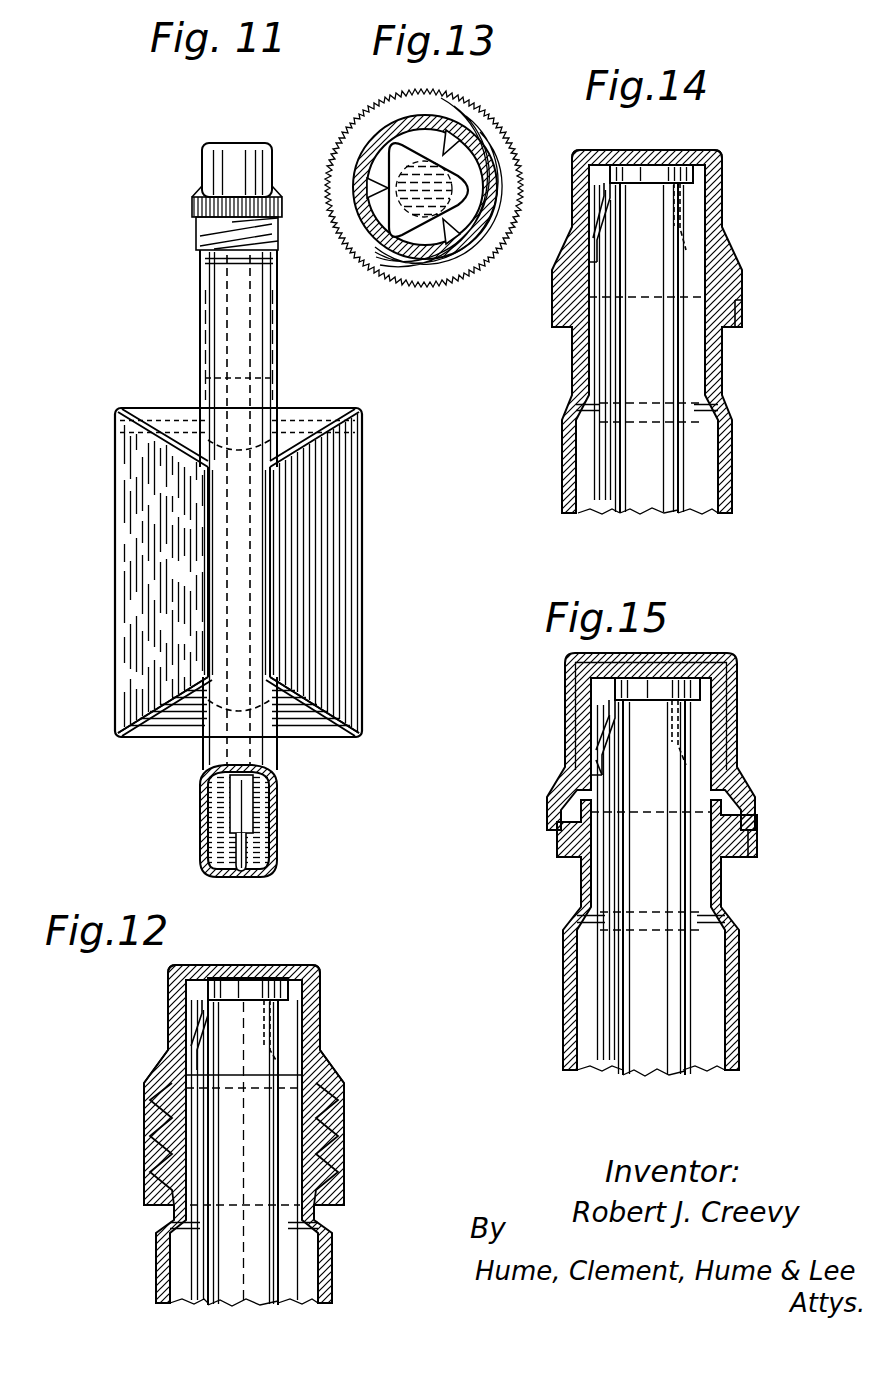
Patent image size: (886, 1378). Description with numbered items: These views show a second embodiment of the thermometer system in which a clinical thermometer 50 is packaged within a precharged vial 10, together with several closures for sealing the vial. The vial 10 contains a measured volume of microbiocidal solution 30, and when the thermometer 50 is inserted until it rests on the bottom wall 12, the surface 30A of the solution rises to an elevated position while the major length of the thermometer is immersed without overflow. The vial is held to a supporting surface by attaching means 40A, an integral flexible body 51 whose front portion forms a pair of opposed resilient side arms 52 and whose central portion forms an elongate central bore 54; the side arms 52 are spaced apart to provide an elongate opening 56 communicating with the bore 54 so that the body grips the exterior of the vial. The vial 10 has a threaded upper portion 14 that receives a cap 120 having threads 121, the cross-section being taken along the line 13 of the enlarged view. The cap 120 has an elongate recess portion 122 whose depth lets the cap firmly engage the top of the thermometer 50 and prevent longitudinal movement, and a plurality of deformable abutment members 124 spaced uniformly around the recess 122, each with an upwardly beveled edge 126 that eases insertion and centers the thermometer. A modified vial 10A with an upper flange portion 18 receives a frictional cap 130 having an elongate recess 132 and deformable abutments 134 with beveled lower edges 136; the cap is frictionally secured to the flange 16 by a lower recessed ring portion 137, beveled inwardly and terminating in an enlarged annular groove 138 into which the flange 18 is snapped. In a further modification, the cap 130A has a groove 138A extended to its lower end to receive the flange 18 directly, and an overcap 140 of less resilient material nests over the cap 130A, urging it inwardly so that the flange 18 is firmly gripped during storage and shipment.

In FIG. 11, the vial 10 is at (284, 346).
In FIG. 14, the vial 10A is at (744, 473).
In FIG. 15, the vial 10A is at (744, 1015).
In FIG. 11, the bottom wall 12 is at (233, 160).
In FIG. 12, the section line 13 is at (143, 1006).
In FIG. 11, the threaded upper portion 14 is at (196, 233).
In FIG. 12, the threaded upper portion 14 is at (341, 1100).
In FIG. 14, the flange 16 is at (720, 376).
In FIG. 15, the flange 16 is at (722, 892).
In FIG. 14, the upper flange portion 18 is at (724, 292).
In FIG. 15, the upper flange portion 18 is at (754, 815).
In FIG. 11, the microbiocidal solution 30 is at (252, 800).
In FIG. 11, the surface of the solution 30A is at (272, 364).
In FIG. 11, the attaching means 40A is at (370, 540).
In FIG. 11, the clinical thermometer 50 is at (241, 823).
In FIG. 14, the clinical thermometer 50 is at (666, 445).
In FIG. 15, the clinical thermometer 50 is at (676, 966).
In FIG. 12, the clinical thermometer 50 is at (226, 1255).
In FIG. 11, the body 51 is at (352, 440).
In FIG. 11, the side arms 52 is at (274, 681).
In FIG. 11, the central bore 54 is at (220, 428).
In FIG. 11, the opening 56 is at (277, 495).
In FIG. 11, the cap 120 is at (202, 157).
In FIG. 13, the cap 120 is at (448, 262).
In FIG. 12, the cap 120 is at (345, 1172).
In FIG. 12, the threads 121 is at (341, 1130).
In FIG. 13, the recess portion 122 is at (374, 214).
In FIG. 12, the recess portion 122 is at (302, 1046).
In FIG. 13, the deformable abutment members 124 is at (372, 175).
In FIG. 12, the deformable abutment members 124 is at (243, 960).
In FIG. 12, the beveled edge 126 is at (186, 1047).
In FIG. 14, the vial cap 130 is at (722, 206).
In FIG. 15, the cap 130A is at (726, 750).
In FIG. 14, the recess 132 is at (702, 252).
In FIG. 15, the recess 132 is at (592, 776).
In FIG. 14, the deformable abutments 134 is at (600, 160).
In FIG. 15, the deformable abutments 134 is at (602, 690).
In FIG. 14, the beveled lower edges 136 is at (730, 212).
In FIG. 15, the beveled lower edges 136 is at (602, 745).
In FIG. 14, the recessed ring portion 137 is at (746, 312).
In FIG. 14, the annular groove 138 is at (746, 300).
In FIG. 15, the groove 138A is at (727, 855).
In FIG. 15, the overcap 140 is at (738, 712).